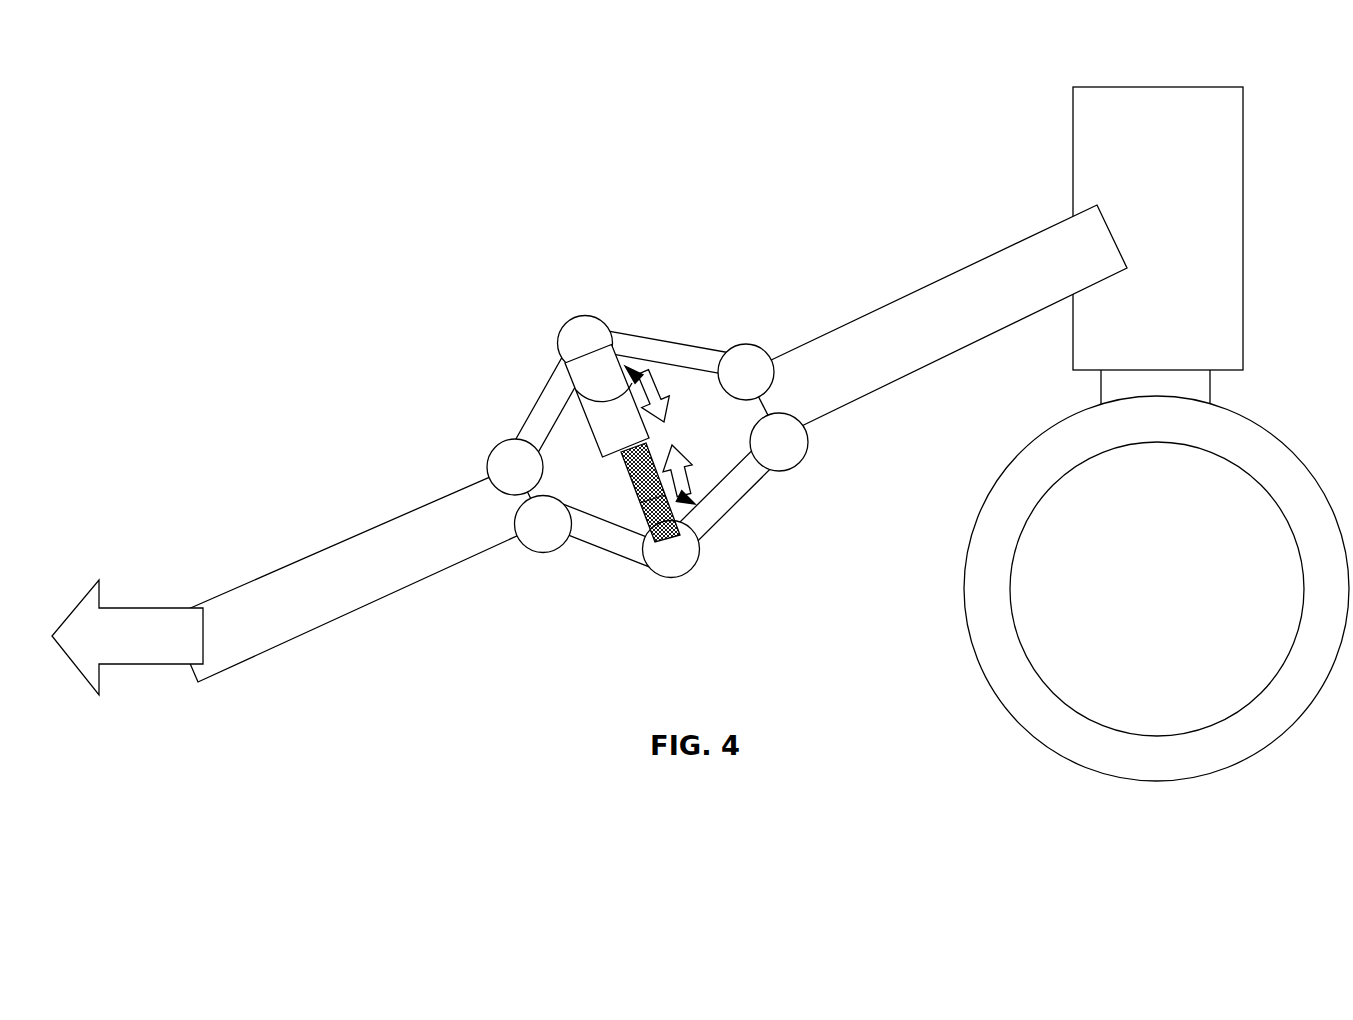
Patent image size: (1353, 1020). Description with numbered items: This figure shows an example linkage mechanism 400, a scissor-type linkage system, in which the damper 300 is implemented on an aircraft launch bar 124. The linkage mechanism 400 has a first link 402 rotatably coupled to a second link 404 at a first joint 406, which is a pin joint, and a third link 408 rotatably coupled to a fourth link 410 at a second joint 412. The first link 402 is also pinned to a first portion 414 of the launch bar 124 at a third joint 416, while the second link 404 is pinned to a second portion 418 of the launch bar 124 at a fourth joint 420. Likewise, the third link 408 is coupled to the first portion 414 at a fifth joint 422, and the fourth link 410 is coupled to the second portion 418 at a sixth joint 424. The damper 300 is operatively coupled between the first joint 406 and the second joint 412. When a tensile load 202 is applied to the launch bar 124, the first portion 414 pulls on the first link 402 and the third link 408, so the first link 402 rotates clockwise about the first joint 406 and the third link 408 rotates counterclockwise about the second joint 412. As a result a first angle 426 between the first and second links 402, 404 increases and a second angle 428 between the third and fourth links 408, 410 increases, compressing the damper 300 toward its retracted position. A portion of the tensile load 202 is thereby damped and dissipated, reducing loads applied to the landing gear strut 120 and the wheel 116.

The wheel 116 is at (965, 601).
The landing gear strut 120 is at (1072, 145).
The launch bar 124 is at (356, 574).
The tensile load 202 is at (132, 607).
The damper 300 is at (587, 444).
The linkage mechanism 400 is at (589, 450).
The first link 402 is at (552, 382).
The second link 404 is at (668, 338).
The first joint 406 is at (582, 317).
The third link 408 is at (613, 553).
The fourth link 410 is at (740, 505).
The second joint 412 is at (673, 578).
The first portion of the launch bar 414 is at (382, 519).
The third joint 416 is at (485, 462).
The second portion of the launch bar 418 is at (937, 280).
The fourth joint 420 is at (758, 345).
The fifth joint 422 is at (535, 555).
The sixth joint 424 is at (800, 466).
The first angle 426 is at (572, 406).
The second angle 428 is at (632, 512).